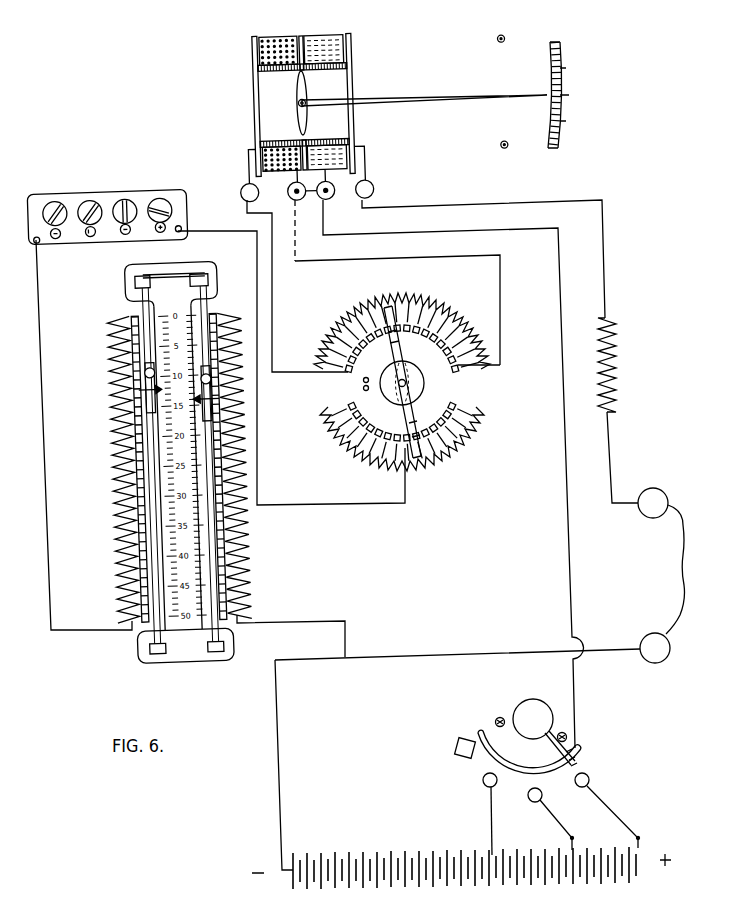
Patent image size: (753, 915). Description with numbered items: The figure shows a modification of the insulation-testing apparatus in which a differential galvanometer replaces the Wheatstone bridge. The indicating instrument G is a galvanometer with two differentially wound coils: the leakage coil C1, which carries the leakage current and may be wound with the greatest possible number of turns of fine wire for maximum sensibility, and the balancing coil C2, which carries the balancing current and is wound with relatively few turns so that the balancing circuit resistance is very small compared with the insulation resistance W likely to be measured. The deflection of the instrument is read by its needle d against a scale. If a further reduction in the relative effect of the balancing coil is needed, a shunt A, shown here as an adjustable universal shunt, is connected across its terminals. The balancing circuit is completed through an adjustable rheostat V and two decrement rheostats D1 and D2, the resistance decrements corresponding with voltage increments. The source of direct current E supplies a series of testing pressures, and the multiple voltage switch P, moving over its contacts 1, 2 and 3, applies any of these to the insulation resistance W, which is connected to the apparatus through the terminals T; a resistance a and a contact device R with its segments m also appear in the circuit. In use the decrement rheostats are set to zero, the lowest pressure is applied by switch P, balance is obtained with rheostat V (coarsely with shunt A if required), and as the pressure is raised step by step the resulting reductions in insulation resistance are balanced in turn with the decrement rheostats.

The indicating instrument G is at (373, 115).
The leakage coil C1 is at (322, 42).
The balancing coil C2 is at (281, 43).
The galvanometer needle and scale d is at (438, 97).
The adjustable rheostat V is at (104, 192).
The decrement rheostat D1 is at (119, 470).
The decrement rheostat D2 is at (244, 466).
The commutator / rheostat R is at (402, 367).
The shunt A is at (489, 366).
The contact segments m is at (402, 447).
The resistance a is at (618, 365).
The terminals T is at (655, 576).
The insulation resistance W is at (685, 569).
The multiple voltage switch P is at (522, 743).
The switch contact 1 is at (491, 814).
The switch contact 2 is at (551, 819).
The switch contact 3 is at (613, 813).
The source of direct current E is at (461, 879).